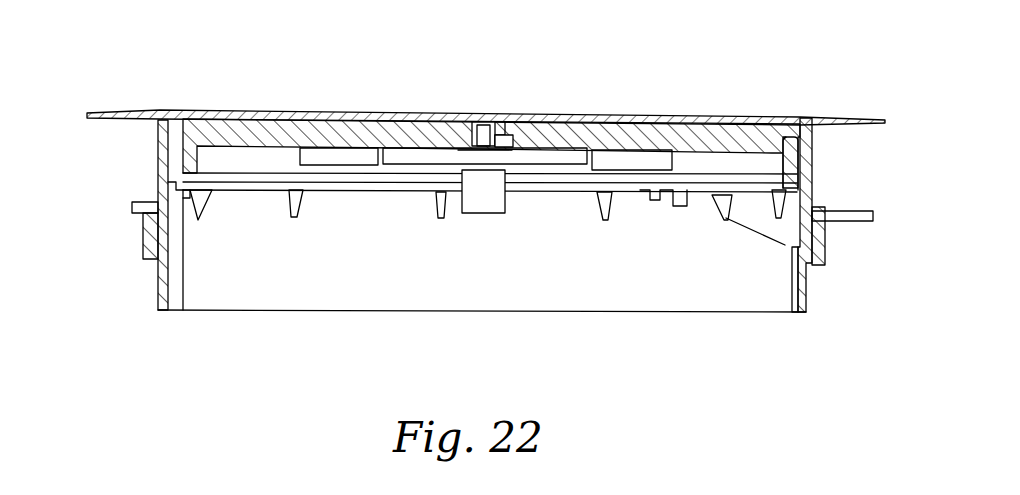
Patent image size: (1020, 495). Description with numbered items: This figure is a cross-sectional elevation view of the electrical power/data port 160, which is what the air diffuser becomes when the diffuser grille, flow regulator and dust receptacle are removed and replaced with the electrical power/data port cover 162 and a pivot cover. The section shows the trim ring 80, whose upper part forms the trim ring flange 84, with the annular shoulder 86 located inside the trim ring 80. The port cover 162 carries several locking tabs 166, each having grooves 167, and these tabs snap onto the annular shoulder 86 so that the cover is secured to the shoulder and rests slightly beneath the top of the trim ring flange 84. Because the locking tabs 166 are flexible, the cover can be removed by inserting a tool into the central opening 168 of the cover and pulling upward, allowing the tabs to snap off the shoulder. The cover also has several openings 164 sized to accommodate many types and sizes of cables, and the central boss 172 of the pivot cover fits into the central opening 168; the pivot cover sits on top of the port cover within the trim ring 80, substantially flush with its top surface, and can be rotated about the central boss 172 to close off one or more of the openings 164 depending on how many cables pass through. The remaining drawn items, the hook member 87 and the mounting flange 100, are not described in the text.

The trim ring flange 84 is at (120, 112).
The trim ring 80 is at (148, 143).
The annular shoulder 86 is at (180, 182).
The hook member 87 is at (181, 198).
The mounting flange 100 is at (145, 233).
The electrical power/data port 160 is at (692, 78).
The electrical power/data port cover 162 is at (258, 122).
The openings 164 is at (490, 200).
The locking tabs 166 is at (197, 204).
The grooves 167 is at (795, 225).
The central opening 168 is at (502, 136).
The central boss 172 is at (470, 120).